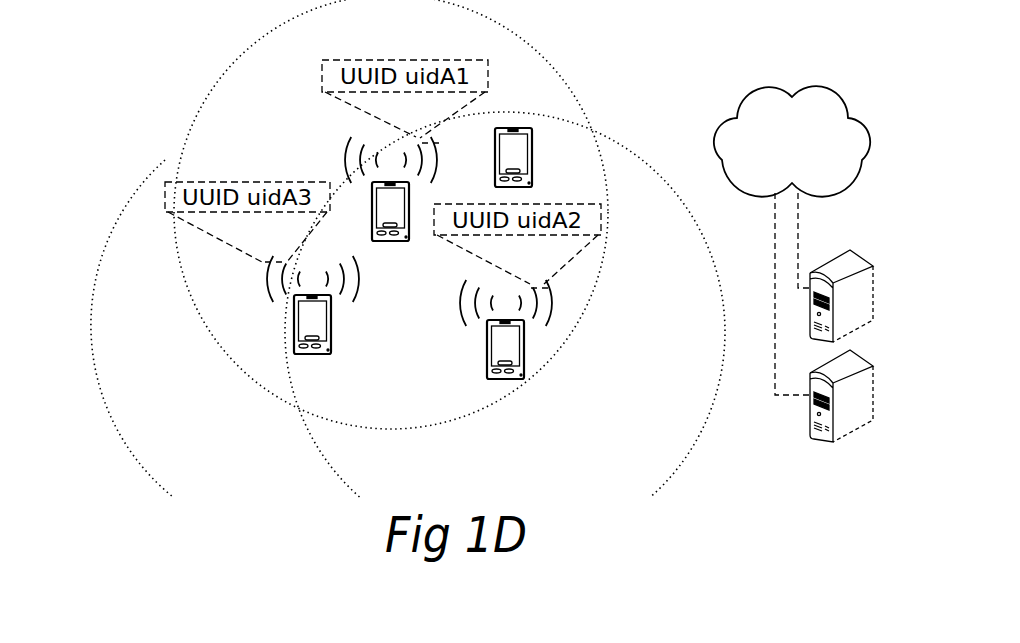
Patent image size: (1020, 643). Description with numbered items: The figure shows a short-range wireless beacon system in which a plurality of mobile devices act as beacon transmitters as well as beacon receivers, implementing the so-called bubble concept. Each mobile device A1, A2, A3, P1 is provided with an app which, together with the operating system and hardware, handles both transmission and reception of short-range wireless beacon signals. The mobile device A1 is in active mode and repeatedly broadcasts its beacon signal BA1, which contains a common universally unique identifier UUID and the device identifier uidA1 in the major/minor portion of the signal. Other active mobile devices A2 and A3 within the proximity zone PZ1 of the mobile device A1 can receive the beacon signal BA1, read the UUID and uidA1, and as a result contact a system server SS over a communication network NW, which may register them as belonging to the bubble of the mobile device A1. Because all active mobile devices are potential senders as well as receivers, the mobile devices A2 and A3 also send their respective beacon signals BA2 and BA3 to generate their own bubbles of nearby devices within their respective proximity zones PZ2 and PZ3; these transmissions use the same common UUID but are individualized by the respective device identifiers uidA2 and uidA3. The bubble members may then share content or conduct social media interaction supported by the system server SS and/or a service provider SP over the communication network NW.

The proximity zone PZ1 is at (189, 126).
The proximity zone PZ2 is at (714, 272).
The proximity zone PZ3 is at (107, 246).
The short-range wireless beacon signal BA1 is at (350, 168).
The beacon signal BA2 is at (462, 308).
The beacon signal BA3 is at (274, 284).
The mobile device A1 is at (390, 211).
The mobile device A2 is at (505, 349).
The mobile device A3 is at (312, 324).
The mobile device P1 is at (513, 157).
The communication network NW is at (792, 141).
The service provider SP is at (832, 268).
The system server SS is at (838, 378).